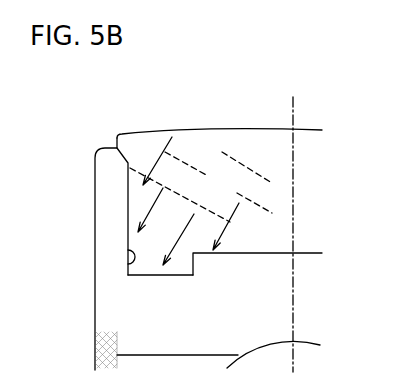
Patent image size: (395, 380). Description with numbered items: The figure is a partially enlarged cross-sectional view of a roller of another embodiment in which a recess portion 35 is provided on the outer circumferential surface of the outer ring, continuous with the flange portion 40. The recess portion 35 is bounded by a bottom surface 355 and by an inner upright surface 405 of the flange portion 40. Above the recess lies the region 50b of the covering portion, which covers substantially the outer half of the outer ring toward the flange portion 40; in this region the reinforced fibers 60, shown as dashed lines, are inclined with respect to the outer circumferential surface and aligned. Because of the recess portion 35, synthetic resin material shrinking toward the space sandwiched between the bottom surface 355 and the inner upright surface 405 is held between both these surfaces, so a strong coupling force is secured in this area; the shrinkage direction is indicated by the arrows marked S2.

The flange portion 40 is at (99, 172).
The inner upright surface 405 is at (127, 265).
The region 50b is at (201, 129).
The bottom surface 355 is at (150, 276).
The recess portion 35 is at (184, 262).
The reinforced fibers 60 is at (213, 211).
The light beam S2 is at (230, 222).